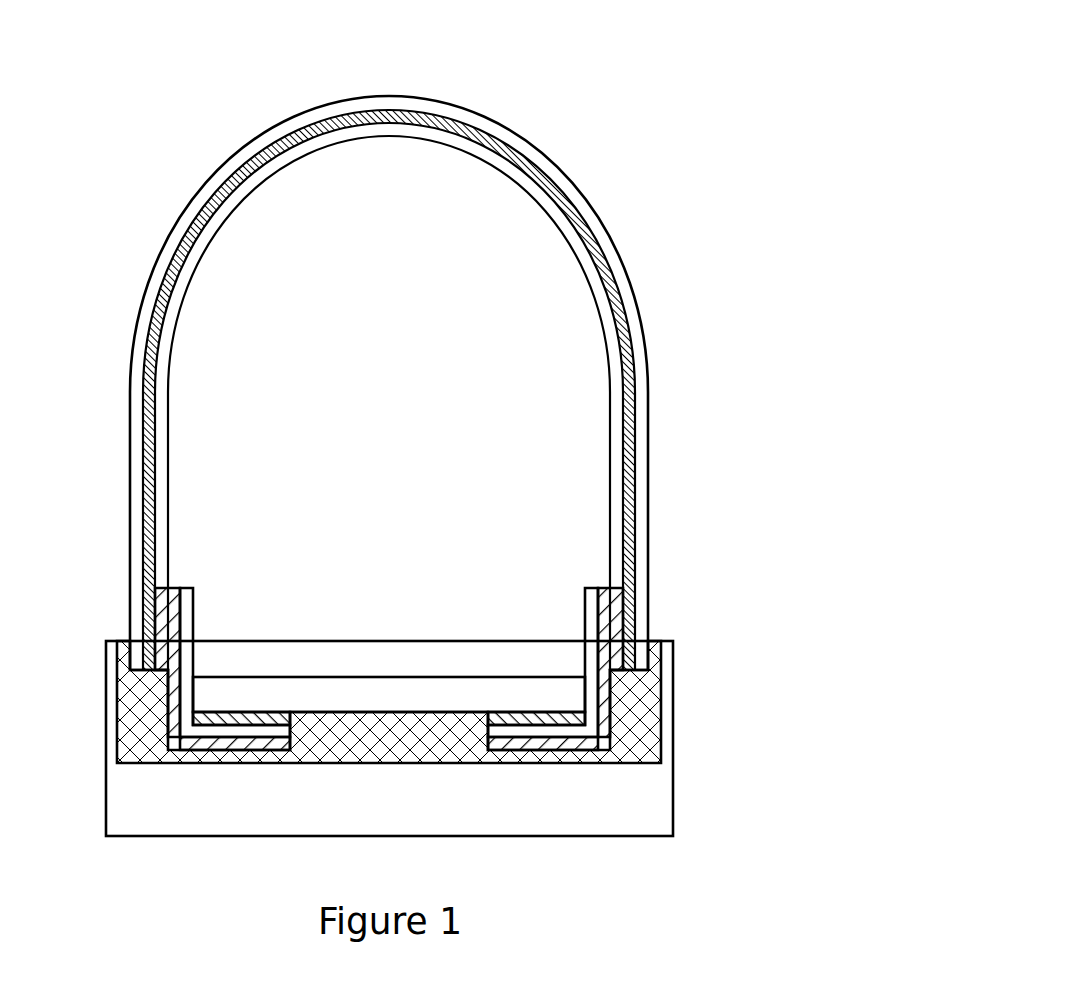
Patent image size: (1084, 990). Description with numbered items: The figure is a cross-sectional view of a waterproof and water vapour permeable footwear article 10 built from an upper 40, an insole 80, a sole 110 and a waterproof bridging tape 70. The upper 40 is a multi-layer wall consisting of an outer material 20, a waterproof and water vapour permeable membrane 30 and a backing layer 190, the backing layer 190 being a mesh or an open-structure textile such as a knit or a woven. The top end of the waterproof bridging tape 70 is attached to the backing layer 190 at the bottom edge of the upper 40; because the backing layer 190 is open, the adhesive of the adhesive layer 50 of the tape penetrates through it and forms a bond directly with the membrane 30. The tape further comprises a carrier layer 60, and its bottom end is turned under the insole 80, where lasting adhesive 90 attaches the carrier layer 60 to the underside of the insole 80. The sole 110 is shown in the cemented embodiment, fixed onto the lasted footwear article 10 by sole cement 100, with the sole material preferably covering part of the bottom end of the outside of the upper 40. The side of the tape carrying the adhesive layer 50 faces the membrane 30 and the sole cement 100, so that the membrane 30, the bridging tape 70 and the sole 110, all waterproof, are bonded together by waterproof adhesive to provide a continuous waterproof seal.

The footwear article 10 is at (630, 80).
The outer material 20 is at (636, 334).
The waterproof and water vapour permeable membrane 30 is at (628, 385).
The backing layer 190 is at (617, 435).
The upper 40 is at (738, 300).
The adhesive layer 50 is at (172, 598).
The carrier layer 60 is at (186, 632).
The waterproof bridging tape 70 is at (290, 558).
The insole 80 is at (360, 690).
The lasting adhesive 90 is at (240, 720).
The sole cement 100 is at (640, 710).
The sole 110 is at (635, 800).